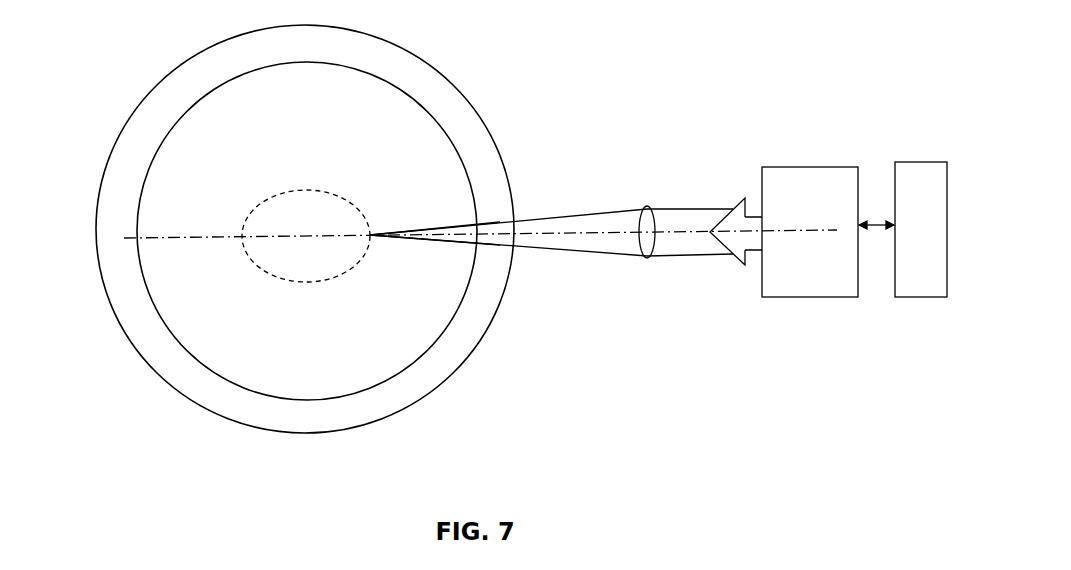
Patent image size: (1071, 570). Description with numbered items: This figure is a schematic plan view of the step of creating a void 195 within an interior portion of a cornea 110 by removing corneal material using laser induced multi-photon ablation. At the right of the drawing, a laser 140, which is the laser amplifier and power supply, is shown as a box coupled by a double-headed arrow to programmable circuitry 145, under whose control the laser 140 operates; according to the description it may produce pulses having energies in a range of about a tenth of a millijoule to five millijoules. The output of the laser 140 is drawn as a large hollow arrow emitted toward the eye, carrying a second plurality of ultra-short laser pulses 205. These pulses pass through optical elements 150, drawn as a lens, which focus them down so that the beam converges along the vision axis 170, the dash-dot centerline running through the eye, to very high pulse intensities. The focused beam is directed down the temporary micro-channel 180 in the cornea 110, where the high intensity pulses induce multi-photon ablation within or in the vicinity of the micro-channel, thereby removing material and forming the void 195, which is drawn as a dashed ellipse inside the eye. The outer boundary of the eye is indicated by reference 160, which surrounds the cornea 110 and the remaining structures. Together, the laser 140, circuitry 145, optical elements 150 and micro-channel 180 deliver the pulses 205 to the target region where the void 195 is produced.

The cornea 110 is at (138, 200).
The sclera 160 is at (152, 370).
The void 195 is at (255, 200).
The temporary micro-channel 180 is at (418, 225).
The vision axis 170 is at (577, 227).
The second plurality of ultra-short laser pulses 205 is at (575, 248).
The optical elements 150 is at (648, 206).
The laser amplifier and power supply 140 is at (797, 297).
The programmable circuitry 145 is at (920, 162).